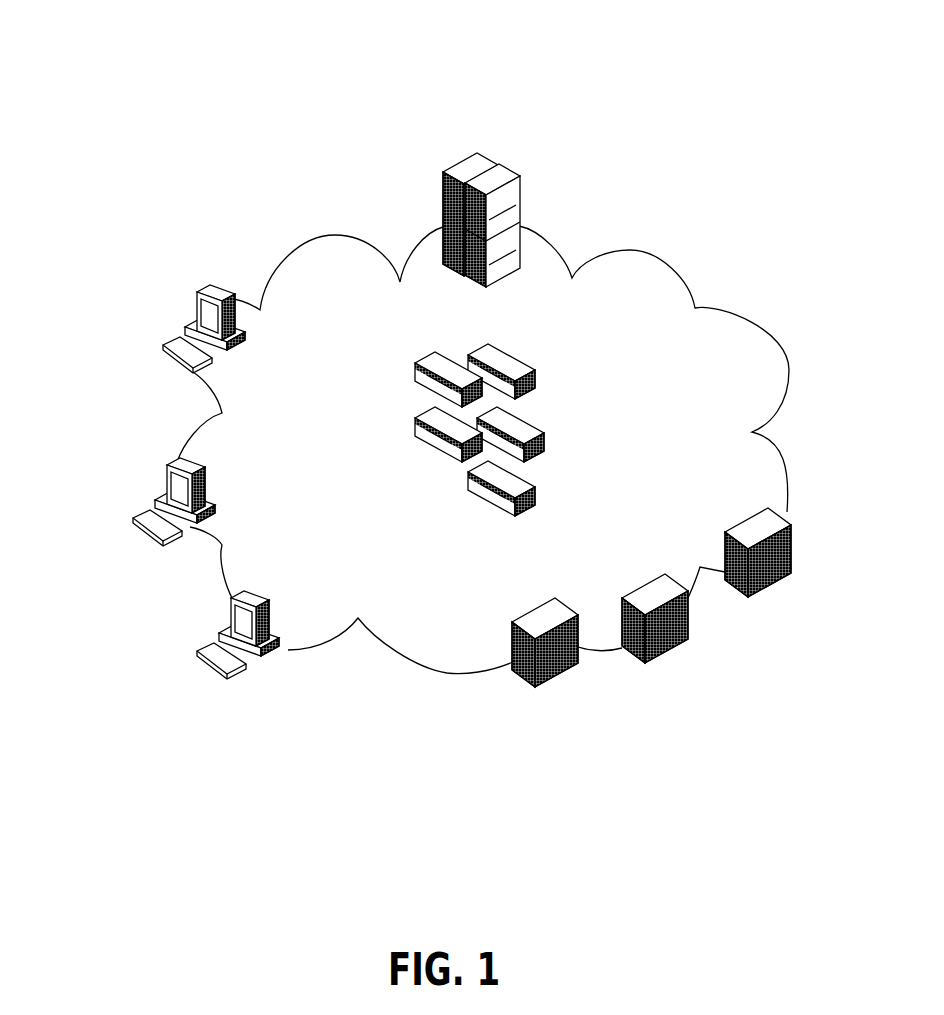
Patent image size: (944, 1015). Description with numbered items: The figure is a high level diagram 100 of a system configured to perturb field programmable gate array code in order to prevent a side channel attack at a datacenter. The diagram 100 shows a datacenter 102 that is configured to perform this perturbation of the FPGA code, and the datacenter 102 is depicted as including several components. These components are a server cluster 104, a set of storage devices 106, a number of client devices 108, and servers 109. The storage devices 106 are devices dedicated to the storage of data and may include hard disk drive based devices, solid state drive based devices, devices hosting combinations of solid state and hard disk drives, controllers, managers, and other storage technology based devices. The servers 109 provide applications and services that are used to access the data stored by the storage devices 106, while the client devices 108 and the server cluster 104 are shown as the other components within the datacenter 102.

The diagram 100 is at (698, 75).
The datacenter 102 is at (353, 540).
The server cluster 104 is at (493, 147).
The storage devices 106 is at (547, 367).
The client devices 108 is at (217, 647).
The servers 109 is at (582, 672).